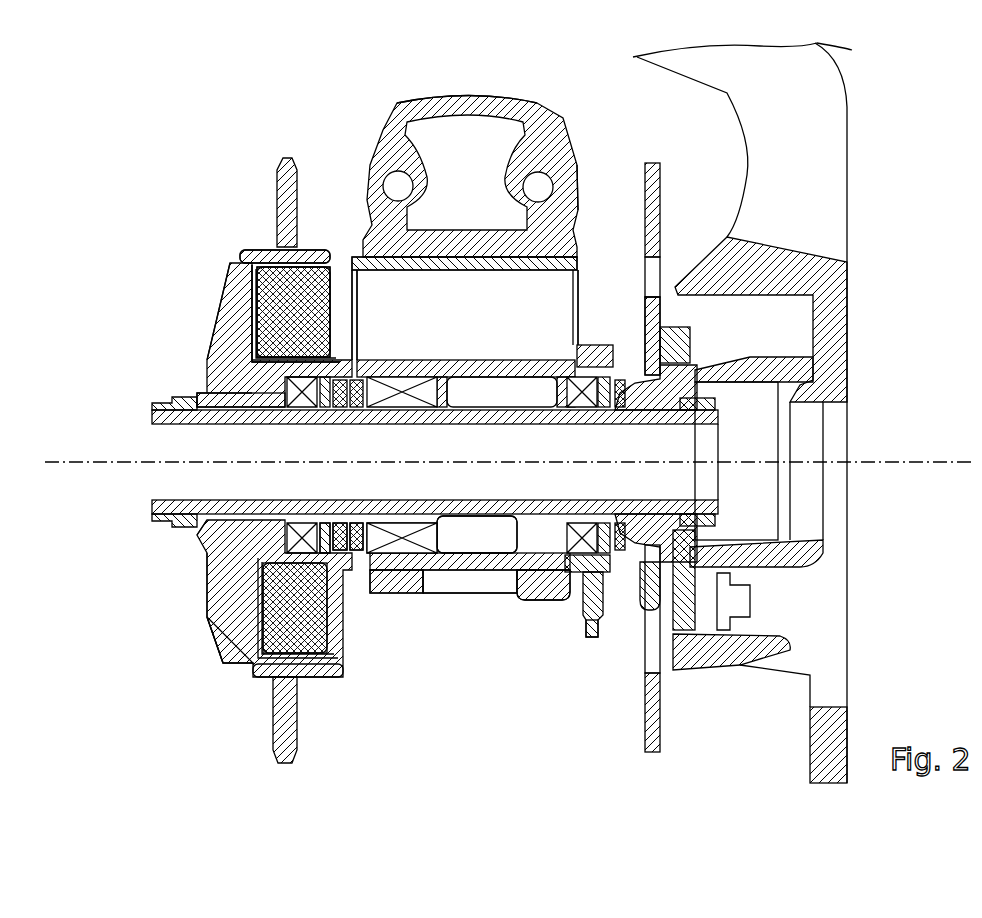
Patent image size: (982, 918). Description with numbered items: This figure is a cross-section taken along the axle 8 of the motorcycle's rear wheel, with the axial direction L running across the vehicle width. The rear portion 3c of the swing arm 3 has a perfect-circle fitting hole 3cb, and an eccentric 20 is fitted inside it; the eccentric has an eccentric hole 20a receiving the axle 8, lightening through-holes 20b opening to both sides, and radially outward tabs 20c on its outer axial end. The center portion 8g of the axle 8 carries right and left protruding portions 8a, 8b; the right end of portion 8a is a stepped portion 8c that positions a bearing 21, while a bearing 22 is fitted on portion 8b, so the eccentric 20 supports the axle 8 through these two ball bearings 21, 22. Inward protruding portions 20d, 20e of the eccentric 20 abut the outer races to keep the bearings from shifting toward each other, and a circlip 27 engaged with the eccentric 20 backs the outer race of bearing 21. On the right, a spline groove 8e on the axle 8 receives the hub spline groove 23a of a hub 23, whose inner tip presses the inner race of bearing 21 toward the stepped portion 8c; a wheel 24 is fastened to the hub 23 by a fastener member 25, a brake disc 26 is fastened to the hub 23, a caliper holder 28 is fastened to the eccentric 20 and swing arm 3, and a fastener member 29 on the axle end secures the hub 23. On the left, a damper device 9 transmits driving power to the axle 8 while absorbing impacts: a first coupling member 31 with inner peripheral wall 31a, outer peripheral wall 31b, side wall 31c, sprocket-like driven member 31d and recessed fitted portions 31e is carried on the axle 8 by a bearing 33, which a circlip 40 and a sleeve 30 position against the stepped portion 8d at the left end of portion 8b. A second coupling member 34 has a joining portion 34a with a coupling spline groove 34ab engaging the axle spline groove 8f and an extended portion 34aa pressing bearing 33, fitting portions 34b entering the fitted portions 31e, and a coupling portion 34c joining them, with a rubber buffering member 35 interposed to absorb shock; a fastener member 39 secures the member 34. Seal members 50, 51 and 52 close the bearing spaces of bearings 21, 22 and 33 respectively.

The swing arm 3 is at (395, 115).
The rear portion of the swing arm 3c is at (520, 110).
The fitting hole 3cb is at (577, 200).
The axle 8 is at (165, 440).
The right protruding portion 8a is at (495, 570).
The left annular protruding portion 8b is at (357, 560).
The stepped portion 8c is at (567, 385).
The stepped portion 8d is at (428, 385).
The spline groove 8e is at (620, 380).
The spline groove 8f is at (205, 560).
The center portion of the axle 8g is at (490, 605).
The damper device 9 is at (210, 672).
The eccentric 20 is at (465, 560).
The eccentric hole 20a is at (445, 575).
The through-hole 20b is at (462, 290).
The tabs 20c is at (354, 265).
The right protruding portion 20d is at (522, 570).
The left protruding portion 20e is at (420, 575).
The bearing 21 is at (556, 600).
The bearing 22 is at (385, 580).
The hub 23 is at (632, 378).
The hub spline groove 23a is at (658, 650).
The wheel 24 is at (850, 282).
The fastener member 25 is at (750, 602).
The brake disc 26 is at (660, 192).
The circlip 27 is at (596, 600).
The caliper holder 28 is at (588, 635).
The fastener member 29 is at (740, 425).
The sleeve 30 is at (325, 560).
The first coupling member 31 is at (268, 235).
The inner peripheral wall 31a is at (250, 370).
The outer peripheral wall 31b is at (265, 250).
The side wall 31c is at (360, 300).
The driven member 31d is at (278, 195).
The fitted portions 31e is at (248, 262).
The bearing 33 is at (300, 345).
The second coupling member 34 is at (222, 668).
The joining portion 34a is at (212, 400).
The extended portion 34aa is at (242, 390).
The coupling spline groove 34ab is at (212, 612).
The fitting portions 34b is at (228, 283).
The coupling portion 34c is at (215, 320).
The buffering member 35 is at (258, 300).
The fastener member 39 is at (165, 512).
The circlip 40 is at (214, 640).
The seal member 50 is at (640, 560).
The seal member 51 is at (345, 565).
The seal member 52 is at (352, 375).
The axial direction L is at (895, 463).